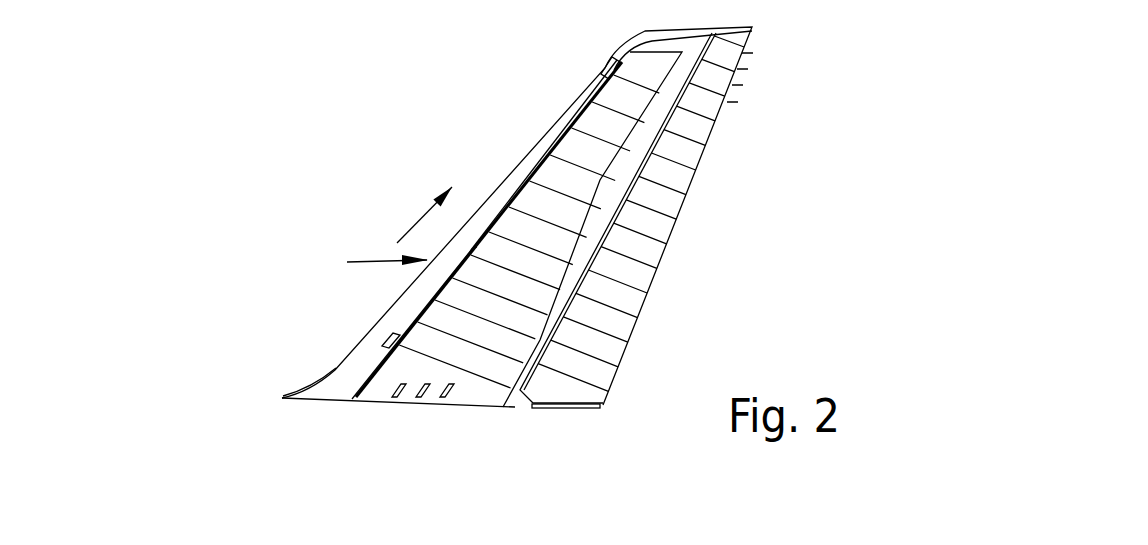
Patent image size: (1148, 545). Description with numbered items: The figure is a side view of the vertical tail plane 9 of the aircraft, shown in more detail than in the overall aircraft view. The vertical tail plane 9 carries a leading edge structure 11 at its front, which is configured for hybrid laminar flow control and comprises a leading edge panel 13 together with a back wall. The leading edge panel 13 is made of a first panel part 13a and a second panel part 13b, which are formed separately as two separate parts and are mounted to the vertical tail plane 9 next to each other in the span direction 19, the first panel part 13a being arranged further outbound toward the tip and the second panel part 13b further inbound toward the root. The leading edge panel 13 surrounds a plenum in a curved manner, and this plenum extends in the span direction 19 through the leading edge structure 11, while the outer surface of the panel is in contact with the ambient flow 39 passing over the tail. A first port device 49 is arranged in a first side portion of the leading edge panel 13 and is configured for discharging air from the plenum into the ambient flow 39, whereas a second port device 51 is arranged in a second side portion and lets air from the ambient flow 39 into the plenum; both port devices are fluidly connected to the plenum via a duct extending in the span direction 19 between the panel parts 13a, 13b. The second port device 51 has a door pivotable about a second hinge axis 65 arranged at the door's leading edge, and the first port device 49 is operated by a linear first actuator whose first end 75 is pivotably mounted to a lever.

The vertical tail plane 9 is at (427, 87).
The leading edge structure 11 is at (428, 313).
The leading edge panel 13 is at (340, 228).
The first panel part 13a is at (500, 203).
The second panel part 13b is at (372, 358).
The span direction 19 is at (422, 215).
The ambient flow 39 is at (370, 260).
The first port device 49 is at (312, 373).
The second port device 51 is at (397, 343).
The second hinge axis 65 is at (497, 318).
The first end 75 is at (353, 378).